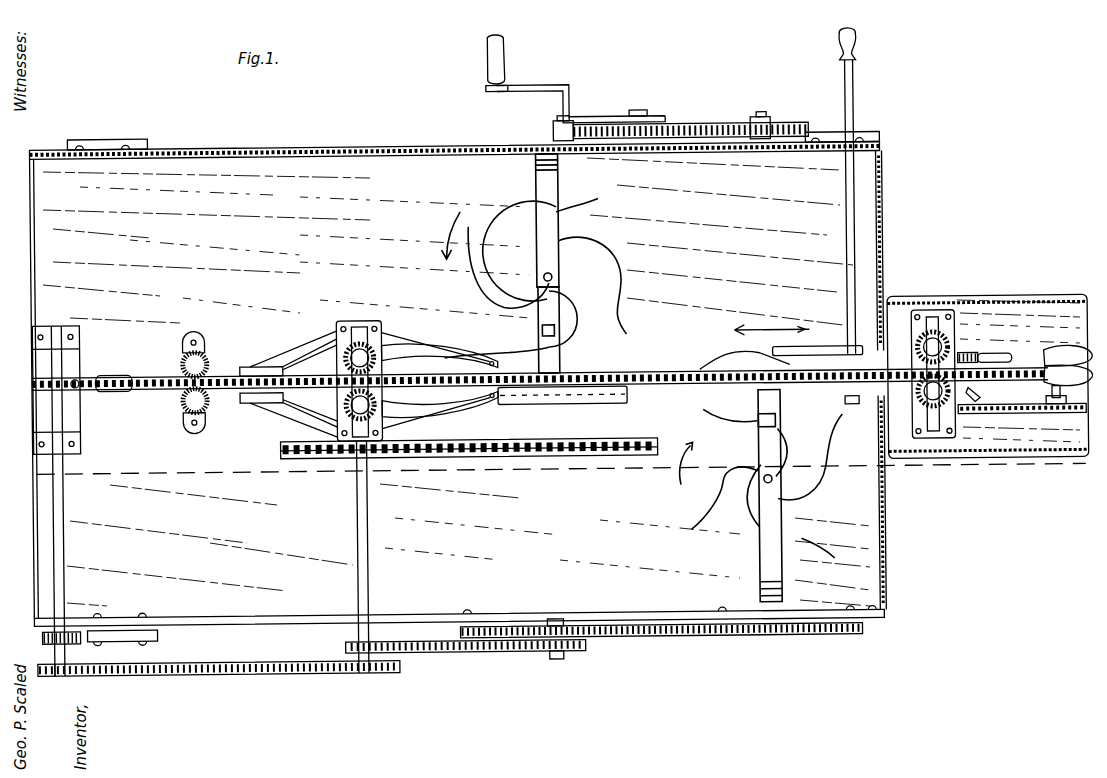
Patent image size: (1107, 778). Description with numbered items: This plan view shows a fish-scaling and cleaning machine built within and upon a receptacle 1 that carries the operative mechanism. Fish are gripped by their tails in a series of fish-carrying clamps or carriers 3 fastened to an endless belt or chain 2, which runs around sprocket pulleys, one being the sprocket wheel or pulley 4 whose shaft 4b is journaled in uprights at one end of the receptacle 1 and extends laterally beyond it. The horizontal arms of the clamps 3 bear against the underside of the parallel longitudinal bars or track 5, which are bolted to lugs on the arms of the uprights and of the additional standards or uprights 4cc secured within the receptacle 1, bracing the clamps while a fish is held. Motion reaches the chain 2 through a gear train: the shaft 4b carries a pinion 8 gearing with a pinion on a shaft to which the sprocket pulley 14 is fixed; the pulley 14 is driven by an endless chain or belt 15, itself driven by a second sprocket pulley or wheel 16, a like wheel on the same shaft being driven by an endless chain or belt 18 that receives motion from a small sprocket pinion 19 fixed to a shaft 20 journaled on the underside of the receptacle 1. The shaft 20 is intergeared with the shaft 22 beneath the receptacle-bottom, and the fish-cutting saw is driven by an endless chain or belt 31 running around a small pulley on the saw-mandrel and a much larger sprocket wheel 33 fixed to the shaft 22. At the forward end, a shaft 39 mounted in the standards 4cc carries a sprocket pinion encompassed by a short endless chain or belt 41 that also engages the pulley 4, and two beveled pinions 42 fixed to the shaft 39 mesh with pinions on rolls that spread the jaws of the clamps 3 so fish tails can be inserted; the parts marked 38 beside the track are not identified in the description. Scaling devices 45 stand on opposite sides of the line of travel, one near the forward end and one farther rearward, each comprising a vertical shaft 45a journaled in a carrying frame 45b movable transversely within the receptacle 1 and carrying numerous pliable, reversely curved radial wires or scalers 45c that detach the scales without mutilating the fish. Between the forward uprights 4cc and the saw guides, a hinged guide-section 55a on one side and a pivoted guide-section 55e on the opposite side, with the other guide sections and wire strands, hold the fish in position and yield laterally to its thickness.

The receptacle 1 is at (549, 328).
The endless belt or chain 2 is at (982, 360).
The fish-carrying clamps or carriers 3 is at (131, 373).
The sprocket wheel or pulley 4 is at (33, 380).
The shaft 4b is at (73, 565).
The standards or uprights 4cc is at (322, 490).
The longitudinal bars or track 5 is at (262, 366).
The pinion 8 is at (40, 634).
The second pinion or sprocket pulley 14 is at (58, 674).
The endless chain or belt 15 is at (191, 673).
The second sprocket pulley or wheel 16 is at (356, 641).
The endless chain or belt 18 is at (440, 653).
The small sprocket wheel or pinion 19 is at (566, 655).
The shaft 20 is at (658, 627).
The shaft 22 is at (549, 622).
The endless chain or belt 31 is at (470, 458).
The sprocket wheel 33 is at (560, 458).
The brush gears 38 is at (184, 346).
The shaft 39 is at (944, 322).
The short endless chain or belt 41 is at (984, 404).
The beveled pinions 42 is at (918, 316).
The scaling devices 45 is at (647, 378).
The vertical shaft 45a is at (765, 483).
The carrying frame 45b is at (724, 572).
The radial wires or scalers 45c is at (612, 266).
The hinged or pivoted guide-section 55a is at (854, 390).
The pivoted guide-section 55e is at (580, 406).